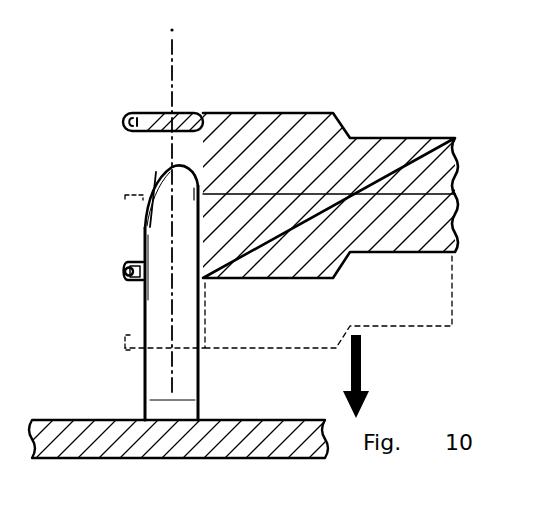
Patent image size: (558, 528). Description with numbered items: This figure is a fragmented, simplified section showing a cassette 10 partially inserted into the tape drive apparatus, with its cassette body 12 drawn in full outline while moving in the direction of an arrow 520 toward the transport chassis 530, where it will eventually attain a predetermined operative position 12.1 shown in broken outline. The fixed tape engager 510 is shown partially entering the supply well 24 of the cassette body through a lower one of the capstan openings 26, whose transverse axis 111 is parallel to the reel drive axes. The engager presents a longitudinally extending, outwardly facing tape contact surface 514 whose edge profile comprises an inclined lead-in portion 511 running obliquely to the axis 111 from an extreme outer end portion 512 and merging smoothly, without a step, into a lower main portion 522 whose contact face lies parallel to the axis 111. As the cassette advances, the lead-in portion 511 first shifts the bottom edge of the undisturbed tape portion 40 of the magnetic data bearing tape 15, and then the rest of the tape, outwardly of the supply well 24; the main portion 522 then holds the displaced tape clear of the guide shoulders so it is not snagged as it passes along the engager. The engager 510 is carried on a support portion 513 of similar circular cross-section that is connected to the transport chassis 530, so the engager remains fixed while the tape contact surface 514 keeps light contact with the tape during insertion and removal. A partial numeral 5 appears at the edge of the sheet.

The cassette 10 is at (289, 182).
The cassette body 12 is at (268, 104).
The supply well 24 is at (146, 152).
The capstan openings 26 is at (158, 118).
The main portion 522 is at (156, 254).
The tape engager 510 is at (163, 232).
The magnetic data bearing tape 15 is at (145, 188).
The undisturbed tape portion 40 is at (158, 199).
The inclined lead-in portion 511 is at (165, 174).
The outer end portion 512 is at (192, 168).
The tape contact surface 514 is at (145, 244).
The support portion 513 is at (163, 393).
The transport chassis 530 is at (125, 413).
The transverse axis 111 is at (183, 59).
The predetermined operative position 12.1 is at (464, 284).
The arrow 520 is at (365, 368).
The partial numeral 5 is at (554, 152).